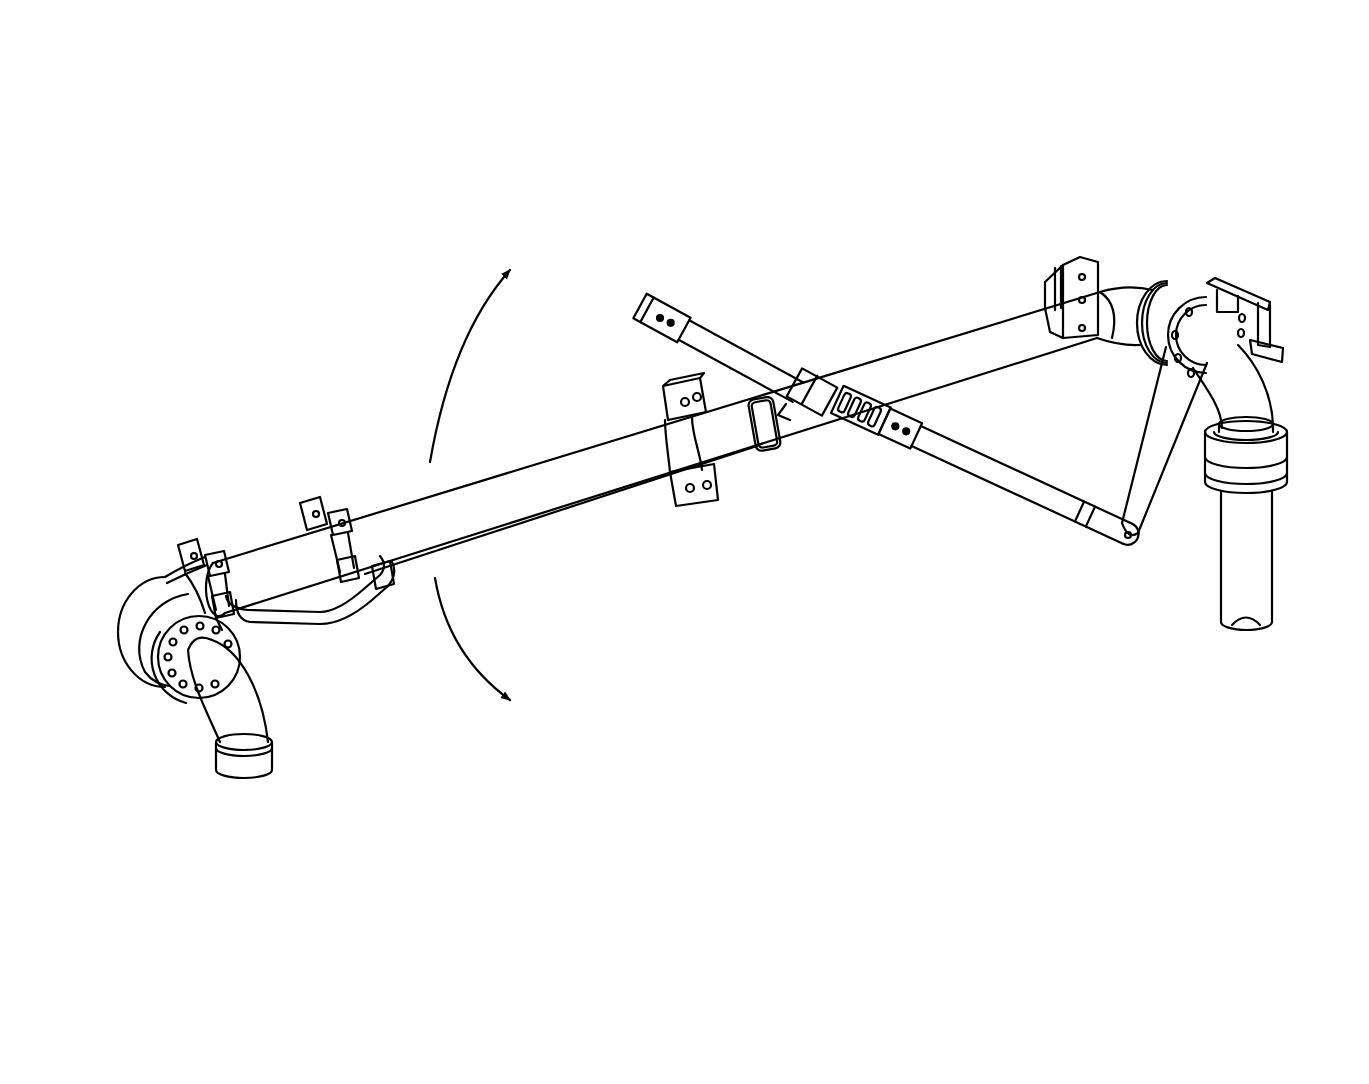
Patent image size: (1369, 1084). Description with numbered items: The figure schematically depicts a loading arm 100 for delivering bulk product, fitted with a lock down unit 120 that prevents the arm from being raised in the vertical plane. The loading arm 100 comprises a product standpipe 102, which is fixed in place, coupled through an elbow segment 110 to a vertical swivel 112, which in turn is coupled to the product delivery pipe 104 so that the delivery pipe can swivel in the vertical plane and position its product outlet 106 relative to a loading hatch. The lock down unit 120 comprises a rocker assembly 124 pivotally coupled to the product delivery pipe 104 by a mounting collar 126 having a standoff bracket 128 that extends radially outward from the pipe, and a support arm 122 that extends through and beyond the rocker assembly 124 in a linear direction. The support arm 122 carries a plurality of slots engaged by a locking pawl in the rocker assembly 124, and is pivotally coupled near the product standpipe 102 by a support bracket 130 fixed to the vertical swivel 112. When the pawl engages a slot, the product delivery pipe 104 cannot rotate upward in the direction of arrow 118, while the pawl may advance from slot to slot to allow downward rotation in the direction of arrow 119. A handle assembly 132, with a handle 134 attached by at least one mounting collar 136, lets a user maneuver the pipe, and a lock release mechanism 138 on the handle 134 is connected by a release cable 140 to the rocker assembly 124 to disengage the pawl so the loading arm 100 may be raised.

The loading arm 100 is at (1084, 188).
The product standpipe 102 is at (1204, 580).
The product delivery pipe 104 is at (971, 320).
The product outlet 106 is at (221, 782).
The elbow segment 110 is at (1268, 405).
The vertical swivel 112 is at (1175, 294).
The arrow 118 is at (455, 369).
The arrow 119 is at (480, 664).
The lock down unit 120 is at (865, 514).
The support arm 122 is at (964, 496).
The rocker assembly 124 is at (811, 367).
The mounting collar 126 is at (663, 402).
The standoff bracket 128 is at (755, 456).
The support bracket 130 is at (1124, 441).
The handle assembly 132 is at (326, 630).
The handle 134 is at (380, 595).
The mounting collar 136 is at (190, 543).
The lock release mechanism 138 is at (283, 614).
The release cable 140 is at (480, 539).